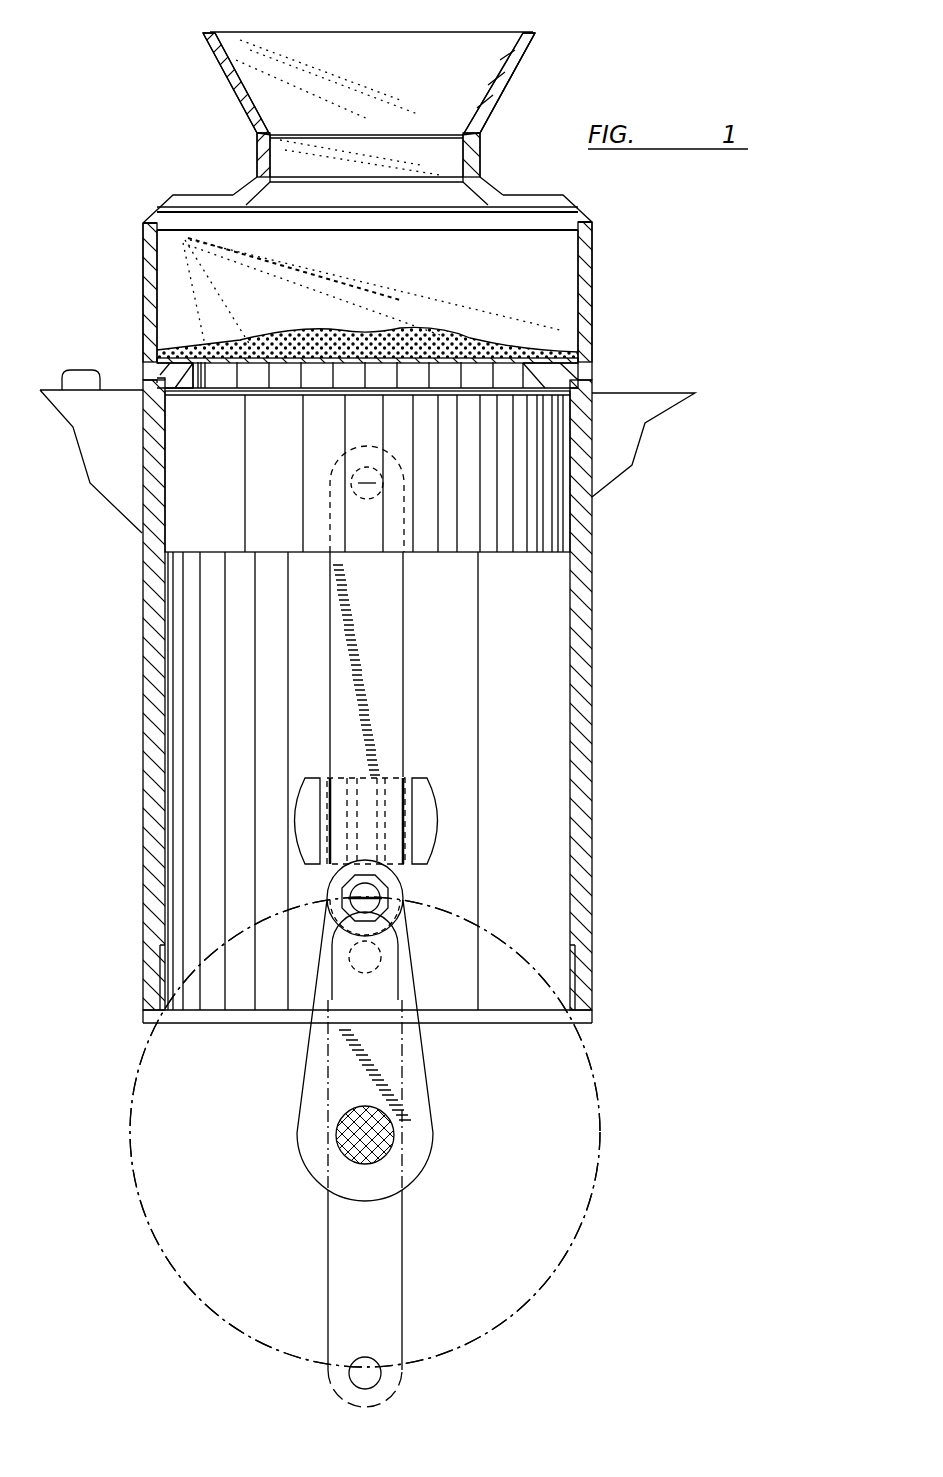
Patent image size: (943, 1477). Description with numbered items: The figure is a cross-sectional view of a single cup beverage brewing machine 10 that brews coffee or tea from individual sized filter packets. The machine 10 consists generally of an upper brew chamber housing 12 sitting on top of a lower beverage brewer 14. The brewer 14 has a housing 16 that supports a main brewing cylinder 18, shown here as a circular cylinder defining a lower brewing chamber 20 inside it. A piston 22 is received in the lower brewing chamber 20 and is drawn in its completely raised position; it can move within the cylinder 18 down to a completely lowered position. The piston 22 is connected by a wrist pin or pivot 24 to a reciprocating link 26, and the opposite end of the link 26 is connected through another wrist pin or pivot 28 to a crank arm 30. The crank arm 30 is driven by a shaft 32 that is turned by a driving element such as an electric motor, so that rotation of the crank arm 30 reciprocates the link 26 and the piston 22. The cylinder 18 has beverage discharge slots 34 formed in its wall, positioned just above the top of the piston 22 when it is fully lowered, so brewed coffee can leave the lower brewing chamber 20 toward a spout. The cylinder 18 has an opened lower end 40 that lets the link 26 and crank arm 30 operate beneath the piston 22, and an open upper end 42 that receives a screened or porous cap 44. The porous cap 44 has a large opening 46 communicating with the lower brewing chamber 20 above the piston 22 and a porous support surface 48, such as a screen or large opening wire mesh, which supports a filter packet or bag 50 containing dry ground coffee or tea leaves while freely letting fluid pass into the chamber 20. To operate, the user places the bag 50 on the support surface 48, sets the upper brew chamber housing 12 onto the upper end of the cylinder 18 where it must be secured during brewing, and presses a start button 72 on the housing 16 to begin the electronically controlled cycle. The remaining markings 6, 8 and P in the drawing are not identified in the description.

The funnel inner wall 6 is at (475, 118).
The funnel wall 8 is at (490, 90).
The beverage brewing machine 10 is at (508, 60).
The upper brew chamber housing 12 is at (601, 249).
The lower beverage brewer 14 is at (601, 818).
The housing 16 is at (635, 413).
The main brewing cylinder 18 is at (582, 593).
The lower brewing chamber 20 is at (522, 720).
The piston 22 is at (537, 520).
The wrist pin or pivot 24 is at (330, 478).
The reciprocating link 26 is at (383, 733).
The wrist pin or pivot 28 is at (368, 896).
The crank arm 30 is at (428, 1067).
The shaft 32 is at (367, 1135).
The beverage discharge slots 34 is at (295, 815).
The opened lower end 40 is at (590, 1090).
The open upper end 42 is at (148, 375).
The porous cap 44 is at (567, 377).
The large opening 46 is at (517, 343).
The porous support surface 48 is at (258, 388).
The packet or bag 50 is at (368, 330).
The start button 72 is at (80, 368).
The crank path P is at (600, 1132).